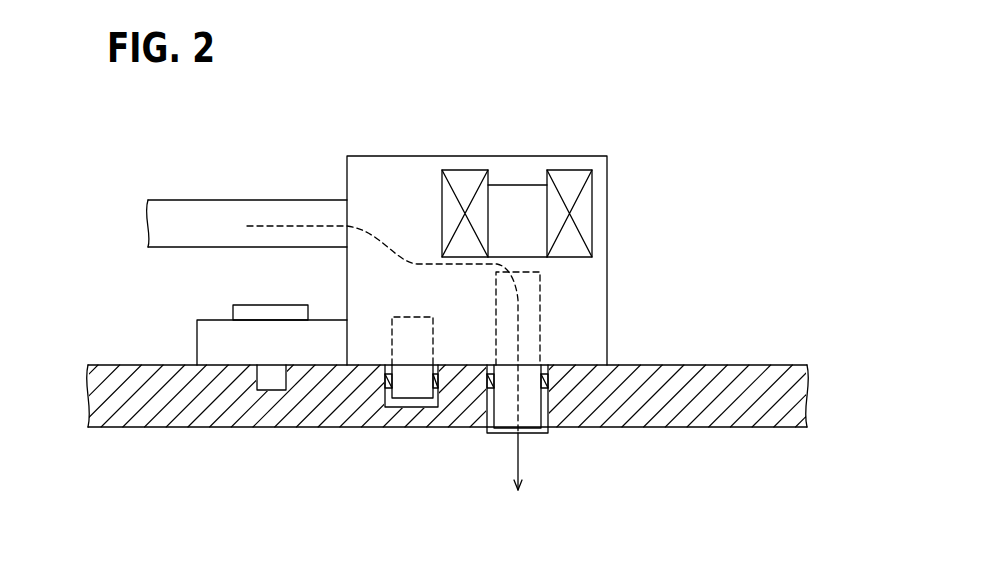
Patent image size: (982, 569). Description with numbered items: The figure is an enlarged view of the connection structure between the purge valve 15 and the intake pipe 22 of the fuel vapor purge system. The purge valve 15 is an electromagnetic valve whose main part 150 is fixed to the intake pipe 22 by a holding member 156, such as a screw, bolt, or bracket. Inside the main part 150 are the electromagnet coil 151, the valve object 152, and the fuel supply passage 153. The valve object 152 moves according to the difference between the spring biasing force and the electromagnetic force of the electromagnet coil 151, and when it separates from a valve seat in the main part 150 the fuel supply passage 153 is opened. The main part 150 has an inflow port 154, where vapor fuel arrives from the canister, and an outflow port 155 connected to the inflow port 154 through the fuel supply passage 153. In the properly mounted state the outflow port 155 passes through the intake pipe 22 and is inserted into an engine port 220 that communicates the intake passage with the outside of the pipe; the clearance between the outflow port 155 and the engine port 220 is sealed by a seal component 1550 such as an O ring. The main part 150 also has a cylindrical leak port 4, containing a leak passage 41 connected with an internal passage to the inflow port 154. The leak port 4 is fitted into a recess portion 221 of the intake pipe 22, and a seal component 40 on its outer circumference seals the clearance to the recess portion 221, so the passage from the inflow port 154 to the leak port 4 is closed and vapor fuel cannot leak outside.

The leak port 4 is at (388, 413).
The purge valve 15 is at (409, 268).
The intake pipe 22 is at (138, 365).
The seal component 40 is at (380, 381).
The leak passage 41 is at (413, 393).
The main part 150 is at (388, 156).
The electromagnet coil 151 is at (570, 170).
The valve object 152 is at (512, 197).
The fuel supply passage 153 is at (532, 310).
The inflow port 154 is at (267, 200).
The outflow port 155 is at (489, 418).
The holding member 156 is at (270, 305).
The engine port 220 is at (546, 427).
The recess portion 221 is at (427, 407).
The seal component 1550 is at (549, 381).